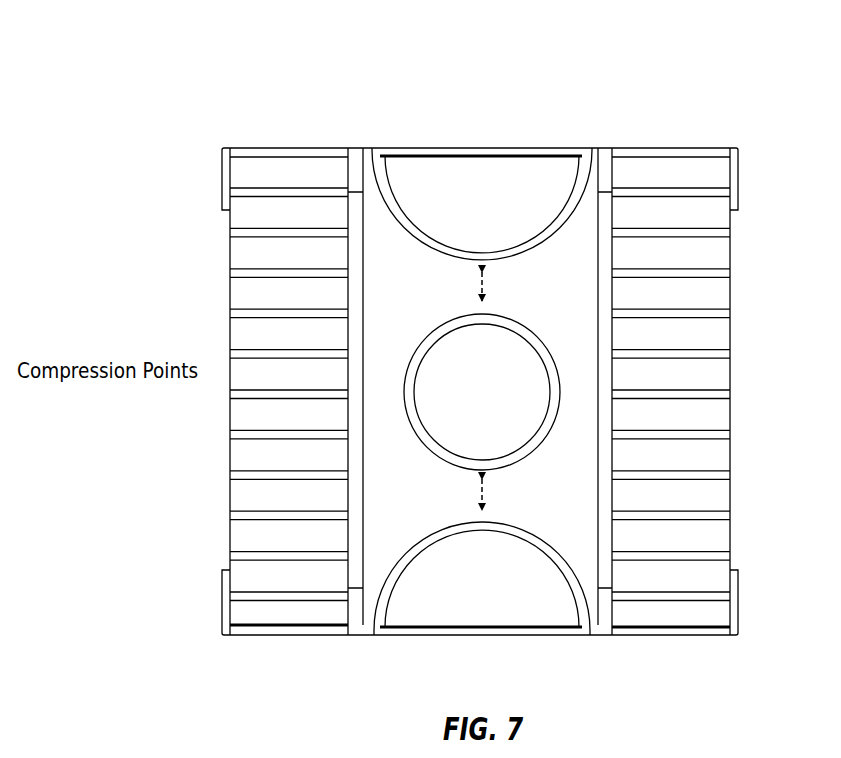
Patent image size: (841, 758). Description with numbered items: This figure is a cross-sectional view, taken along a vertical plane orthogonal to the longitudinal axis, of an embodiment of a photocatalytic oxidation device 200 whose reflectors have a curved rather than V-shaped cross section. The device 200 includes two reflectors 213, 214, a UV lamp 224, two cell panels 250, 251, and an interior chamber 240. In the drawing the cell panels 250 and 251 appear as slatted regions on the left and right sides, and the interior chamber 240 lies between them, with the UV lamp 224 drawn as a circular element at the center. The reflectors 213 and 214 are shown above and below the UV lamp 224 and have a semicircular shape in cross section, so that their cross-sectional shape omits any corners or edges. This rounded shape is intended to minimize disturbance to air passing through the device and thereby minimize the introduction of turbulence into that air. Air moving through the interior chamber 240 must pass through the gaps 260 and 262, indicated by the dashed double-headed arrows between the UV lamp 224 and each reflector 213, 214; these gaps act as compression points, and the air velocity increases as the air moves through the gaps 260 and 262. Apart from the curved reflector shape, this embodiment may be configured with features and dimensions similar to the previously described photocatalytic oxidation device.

The photocatalytic oxidation device 200 is at (206, 96).
The reflector 213 is at (400, 588).
The reflector 214 is at (400, 203).
The UV lamp 224 is at (520, 350).
The interior chamber 240 is at (578, 498).
The cell panel 250 is at (705, 435).
The cell panel 251 is at (251, 477).
The gap 260 is at (470, 288).
The gap 262 is at (470, 487).